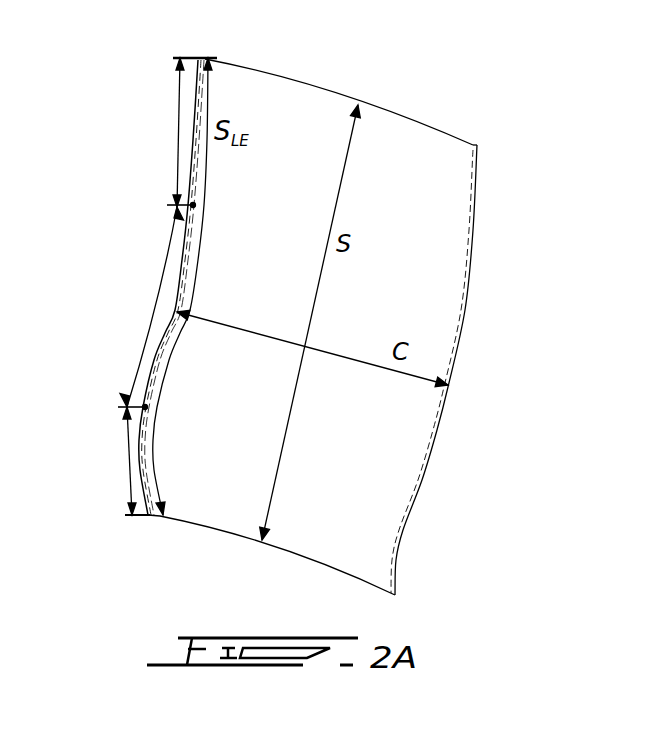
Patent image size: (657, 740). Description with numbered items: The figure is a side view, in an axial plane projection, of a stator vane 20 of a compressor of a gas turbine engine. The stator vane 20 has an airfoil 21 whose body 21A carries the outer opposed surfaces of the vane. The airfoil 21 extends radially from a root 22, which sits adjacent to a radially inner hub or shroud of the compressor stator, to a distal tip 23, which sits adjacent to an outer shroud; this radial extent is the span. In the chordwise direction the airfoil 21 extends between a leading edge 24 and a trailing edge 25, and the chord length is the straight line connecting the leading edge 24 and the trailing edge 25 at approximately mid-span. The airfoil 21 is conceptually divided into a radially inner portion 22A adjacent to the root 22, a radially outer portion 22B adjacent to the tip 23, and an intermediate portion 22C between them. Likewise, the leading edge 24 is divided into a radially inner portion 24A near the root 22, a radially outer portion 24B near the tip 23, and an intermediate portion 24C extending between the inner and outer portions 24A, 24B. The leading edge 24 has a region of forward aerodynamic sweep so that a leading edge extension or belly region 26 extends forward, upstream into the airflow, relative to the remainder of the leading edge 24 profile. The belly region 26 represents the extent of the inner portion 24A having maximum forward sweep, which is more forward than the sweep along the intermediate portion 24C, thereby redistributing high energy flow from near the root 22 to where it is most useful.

The stator vane 20 is at (440, 100).
The airfoil 21 is at (268, 74).
The body 21A is at (335, 128).
The root 22 is at (263, 545).
The radially inner portion 22A is at (84, 461).
The radially outer portion 22B is at (137, 132).
The intermediate portion 22C is at (128, 307).
The distal tip 23 is at (463, 138).
The leading edge 24 is at (198, 165).
The radially inner portion of the leading edge 24A is at (114, 485).
The radially outer portion of the leading edge 24B is at (176, 133).
The intermediate portion of the leading edge 24C is at (137, 343).
The trailing edge 25 is at (465, 315).
The belly region 26 is at (135, 441).